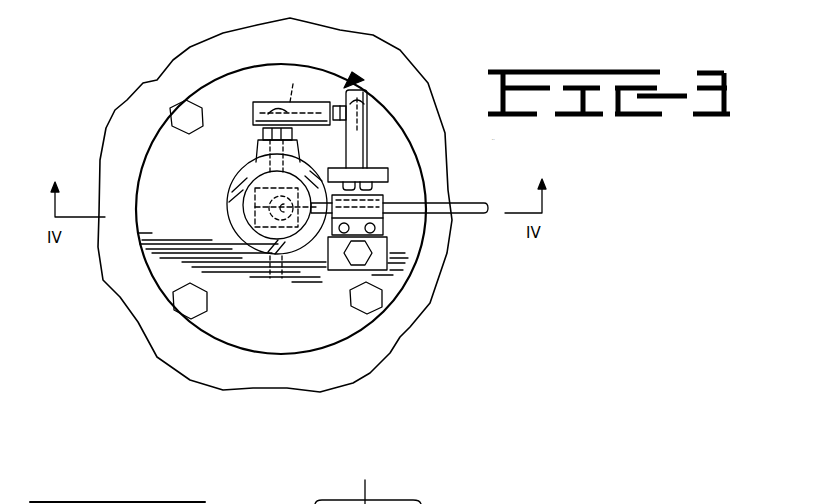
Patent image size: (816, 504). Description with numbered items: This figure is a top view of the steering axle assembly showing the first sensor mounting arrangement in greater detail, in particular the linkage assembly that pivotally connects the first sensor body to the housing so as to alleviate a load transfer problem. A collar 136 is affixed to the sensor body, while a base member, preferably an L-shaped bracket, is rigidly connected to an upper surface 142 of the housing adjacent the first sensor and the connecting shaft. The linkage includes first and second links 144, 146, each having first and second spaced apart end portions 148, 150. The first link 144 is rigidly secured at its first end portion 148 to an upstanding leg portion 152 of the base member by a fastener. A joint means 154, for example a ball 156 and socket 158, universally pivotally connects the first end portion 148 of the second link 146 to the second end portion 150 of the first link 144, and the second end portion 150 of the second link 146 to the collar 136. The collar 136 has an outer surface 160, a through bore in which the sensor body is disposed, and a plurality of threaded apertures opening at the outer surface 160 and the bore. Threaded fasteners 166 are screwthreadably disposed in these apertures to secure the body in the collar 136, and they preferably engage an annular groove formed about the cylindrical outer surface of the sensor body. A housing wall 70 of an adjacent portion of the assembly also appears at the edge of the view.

The housing wall 70 is at (389, 500).
The collar 136 is at (228, 207).
The upper surface 142 is at (318, 338).
The first link 144 is at (385, 125).
The second link 146 is at (301, 102).
The first end portion 148 is at (356, 76).
The second end portion 150 is at (262, 102).
The upstanding leg portion 152 is at (405, 203).
The joint means 154 is at (257, 132).
The ball 156 is at (252, 114).
The socket 158 is at (434, 86).
The outer surface 160 is at (230, 232).
The threaded fasteners 166 is at (275, 256).